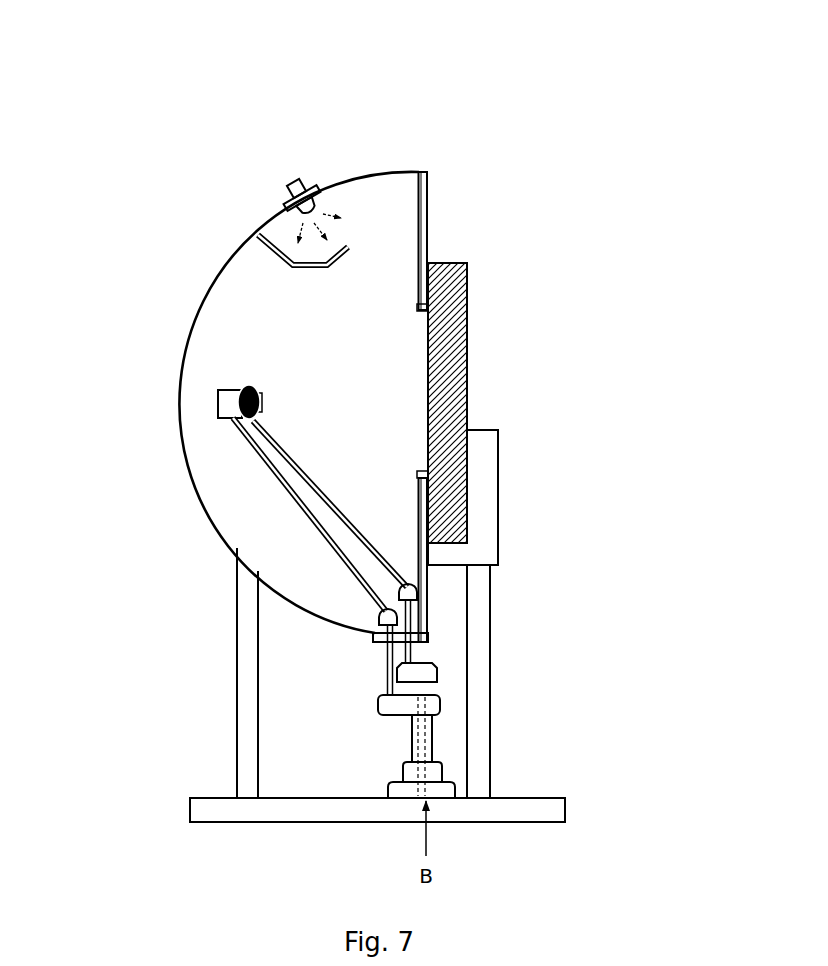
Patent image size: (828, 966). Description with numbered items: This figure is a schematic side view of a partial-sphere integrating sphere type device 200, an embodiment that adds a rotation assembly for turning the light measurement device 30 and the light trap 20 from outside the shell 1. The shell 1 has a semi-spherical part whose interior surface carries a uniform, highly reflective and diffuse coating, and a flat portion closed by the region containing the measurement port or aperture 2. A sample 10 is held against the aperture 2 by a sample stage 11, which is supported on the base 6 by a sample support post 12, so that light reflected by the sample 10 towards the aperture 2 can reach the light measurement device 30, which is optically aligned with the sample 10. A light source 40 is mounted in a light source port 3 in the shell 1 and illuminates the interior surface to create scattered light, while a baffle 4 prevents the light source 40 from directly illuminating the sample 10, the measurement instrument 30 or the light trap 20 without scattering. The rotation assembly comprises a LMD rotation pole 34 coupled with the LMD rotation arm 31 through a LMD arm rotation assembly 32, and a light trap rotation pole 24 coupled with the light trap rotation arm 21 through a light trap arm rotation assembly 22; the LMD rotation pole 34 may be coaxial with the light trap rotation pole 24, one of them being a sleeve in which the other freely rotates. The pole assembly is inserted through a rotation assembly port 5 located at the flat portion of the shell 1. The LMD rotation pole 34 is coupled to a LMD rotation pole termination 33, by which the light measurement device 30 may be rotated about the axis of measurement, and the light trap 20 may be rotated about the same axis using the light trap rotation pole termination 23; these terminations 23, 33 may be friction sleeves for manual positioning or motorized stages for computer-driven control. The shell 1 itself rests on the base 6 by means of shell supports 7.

The integrating sphere type device 200 is at (327, 35).
The shell 1 is at (223, 268).
The aperture 2 is at (410, 468).
The light source port 3 is at (280, 203).
The light source 40 is at (313, 178).
The baffle 4 is at (668, 213).
The sample 10 is at (468, 298).
The sample stage 11 is at (508, 482).
The sample support post 12 is at (493, 578).
The light trap 20 is at (242, 380).
The light measurement device 30 is at (212, 405).
The LMD rotation arm 31 is at (256, 457).
The light trap rotation arm 21 is at (302, 465).
The shell supports 7 is at (230, 636).
The rotation assembly port 5 is at (367, 650).
The light trap arm rotation assembly 22 is at (440, 658).
The LMD arm rotation assembly 32 is at (444, 698).
The LMD rotation pole 34 is at (405, 730).
The light trap rotation pole 24 is at (415, 773).
The LMD rotation pole termination 33 is at (442, 760).
The light trap rotation pole termination 23 is at (460, 790).
The base 6 is at (565, 808).